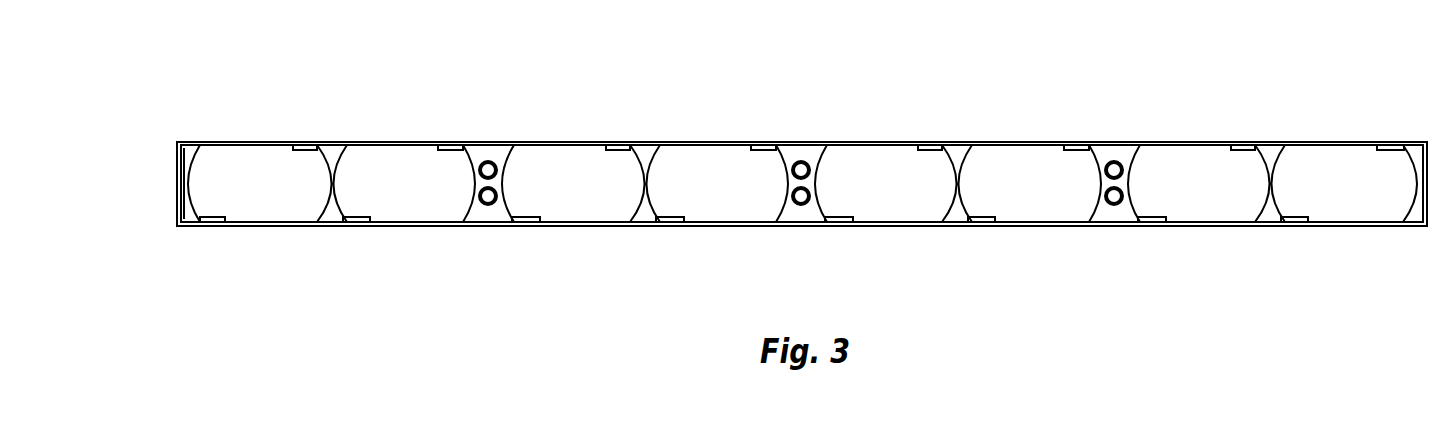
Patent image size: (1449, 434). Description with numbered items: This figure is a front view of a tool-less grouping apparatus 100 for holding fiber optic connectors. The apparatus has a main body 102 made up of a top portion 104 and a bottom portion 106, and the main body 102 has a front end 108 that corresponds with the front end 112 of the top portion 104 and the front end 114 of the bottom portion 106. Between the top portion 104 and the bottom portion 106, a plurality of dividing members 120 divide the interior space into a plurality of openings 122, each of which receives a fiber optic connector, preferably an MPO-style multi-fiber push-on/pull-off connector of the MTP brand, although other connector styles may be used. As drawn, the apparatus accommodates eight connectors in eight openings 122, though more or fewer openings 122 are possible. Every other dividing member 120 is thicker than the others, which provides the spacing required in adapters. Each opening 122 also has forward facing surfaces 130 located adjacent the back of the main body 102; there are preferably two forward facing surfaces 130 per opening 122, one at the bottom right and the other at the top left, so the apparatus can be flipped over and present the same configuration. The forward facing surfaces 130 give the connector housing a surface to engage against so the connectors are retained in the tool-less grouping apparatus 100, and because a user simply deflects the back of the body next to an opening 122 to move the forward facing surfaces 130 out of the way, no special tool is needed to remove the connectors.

The tool-less grouping apparatus 100 is at (1062, 88).
The main body 102 is at (850, 97).
The top portion 104 is at (712, 142).
The bottom portion 106 is at (707, 227).
The front end 108 is at (160, 200).
The front end of the top portion 112 is at (262, 142).
The front end of the bottom portion 114 is at (281, 227).
The dividing members 120 is at (646, 215).
The openings 122 is at (402, 165).
The forward facing surface 130 is at (1390, 147).